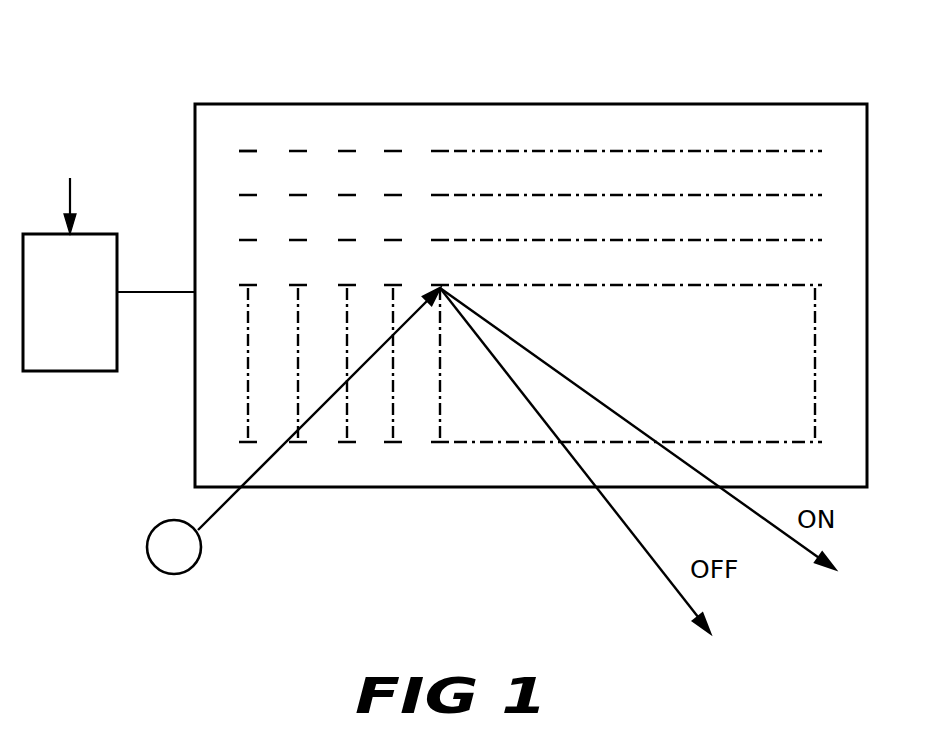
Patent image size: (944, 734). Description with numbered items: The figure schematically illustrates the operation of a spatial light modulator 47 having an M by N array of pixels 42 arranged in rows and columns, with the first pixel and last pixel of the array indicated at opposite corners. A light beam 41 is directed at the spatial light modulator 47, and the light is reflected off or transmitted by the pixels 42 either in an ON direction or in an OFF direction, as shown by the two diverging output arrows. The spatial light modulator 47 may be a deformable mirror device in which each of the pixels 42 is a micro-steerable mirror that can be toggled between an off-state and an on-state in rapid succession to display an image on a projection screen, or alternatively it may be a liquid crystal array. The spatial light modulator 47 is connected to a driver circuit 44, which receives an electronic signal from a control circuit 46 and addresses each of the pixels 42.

The light beam 41 is at (181, 557).
The pixels 42 is at (243, 150).
The driver circuit 44 is at (72, 349).
The control circuit 46 is at (66, 190).
The spatial light modulator 47 is at (262, 104).